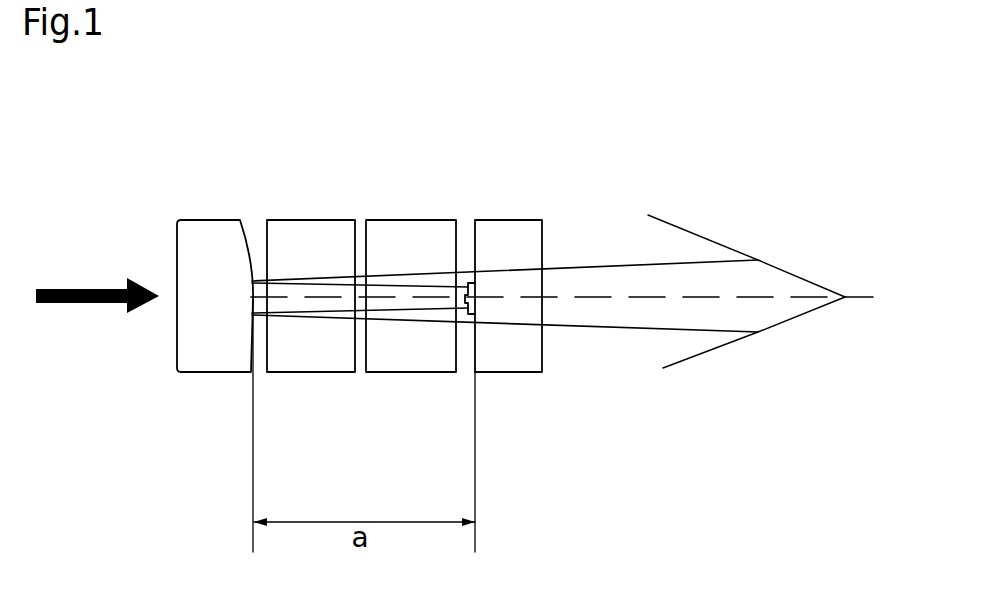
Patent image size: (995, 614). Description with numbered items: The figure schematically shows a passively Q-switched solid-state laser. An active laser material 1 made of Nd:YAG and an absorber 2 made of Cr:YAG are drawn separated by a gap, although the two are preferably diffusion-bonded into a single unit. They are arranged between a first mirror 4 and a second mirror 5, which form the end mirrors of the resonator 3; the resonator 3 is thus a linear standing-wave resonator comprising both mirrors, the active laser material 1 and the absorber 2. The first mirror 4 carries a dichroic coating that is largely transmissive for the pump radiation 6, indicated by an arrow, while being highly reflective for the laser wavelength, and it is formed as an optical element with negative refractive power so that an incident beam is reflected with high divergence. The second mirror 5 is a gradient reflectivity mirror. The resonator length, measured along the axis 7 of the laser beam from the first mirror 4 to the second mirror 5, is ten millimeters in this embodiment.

The active laser material 1 is at (308, 235).
The absorber 2 is at (404, 237).
The resonator 3 is at (510, 180).
The first mirror 4 is at (202, 239).
The second mirror 5 is at (512, 235).
The pump radiation 6 is at (83, 303).
The axis of the laser beam 7 is at (308, 297).